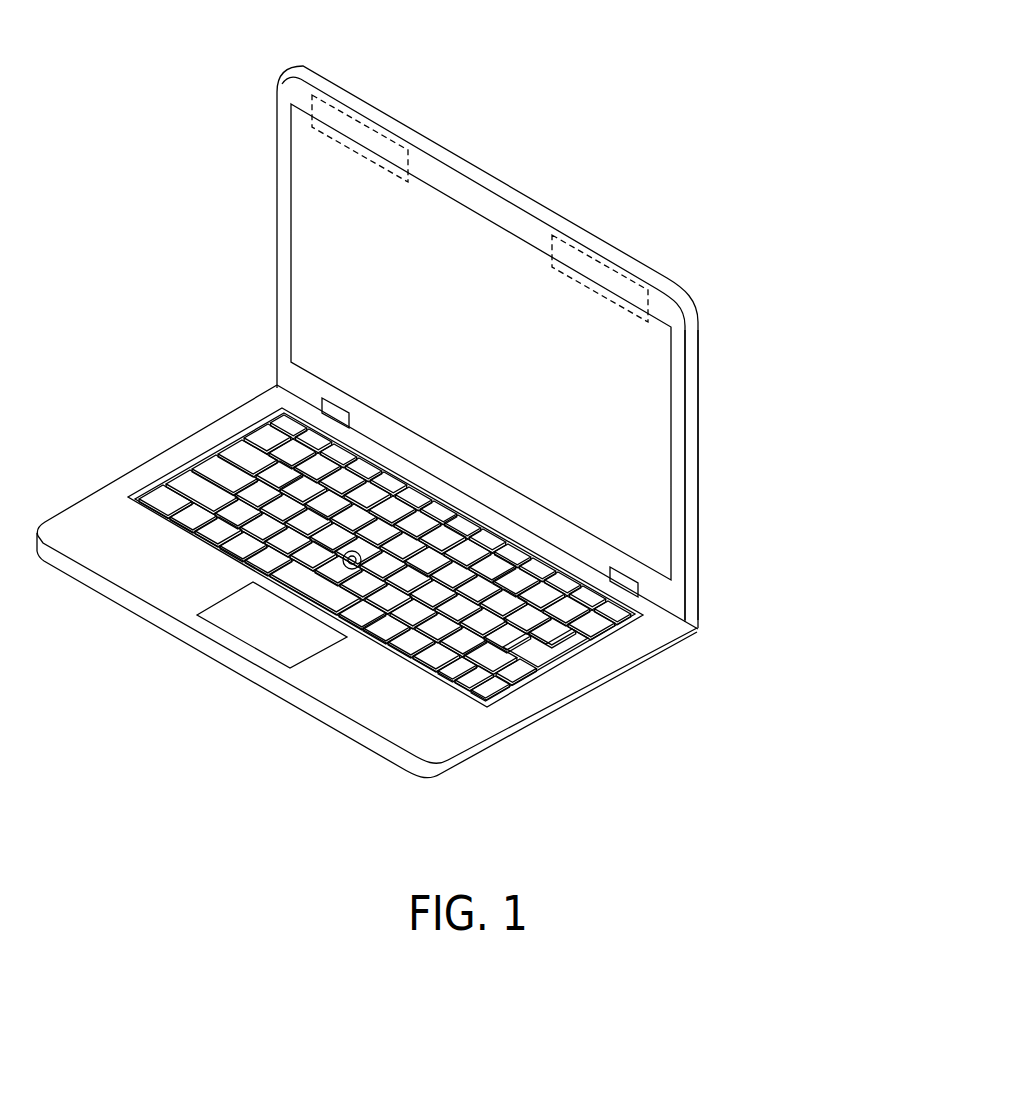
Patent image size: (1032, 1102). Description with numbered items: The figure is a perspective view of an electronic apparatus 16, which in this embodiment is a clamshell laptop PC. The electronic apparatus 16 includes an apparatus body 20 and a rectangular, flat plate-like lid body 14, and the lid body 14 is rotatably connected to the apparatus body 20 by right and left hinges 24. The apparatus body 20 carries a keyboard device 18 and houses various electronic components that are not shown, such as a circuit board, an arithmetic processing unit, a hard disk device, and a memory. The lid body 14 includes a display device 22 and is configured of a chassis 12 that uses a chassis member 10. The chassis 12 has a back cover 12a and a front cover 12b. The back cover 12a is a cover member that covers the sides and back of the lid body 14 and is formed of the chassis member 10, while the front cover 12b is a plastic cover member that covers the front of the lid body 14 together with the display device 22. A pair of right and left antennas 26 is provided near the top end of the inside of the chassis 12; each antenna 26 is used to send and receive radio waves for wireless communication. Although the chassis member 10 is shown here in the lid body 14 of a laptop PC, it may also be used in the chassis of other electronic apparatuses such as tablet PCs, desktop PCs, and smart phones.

The chassis member 10 is at (700, 352).
The chassis 12 is at (597, 343).
The back cover 12a is at (777, 475).
The front cover 12b is at (678, 428).
The lid body 14 is at (589, 226).
The electronic apparatus 16 is at (214, 45).
The keyboard device 18 is at (207, 455).
The apparatus body 20 is at (88, 488).
The display device 22 is at (463, 258).
The hinges 24 is at (334, 410).
The antennas 26 is at (366, 128).